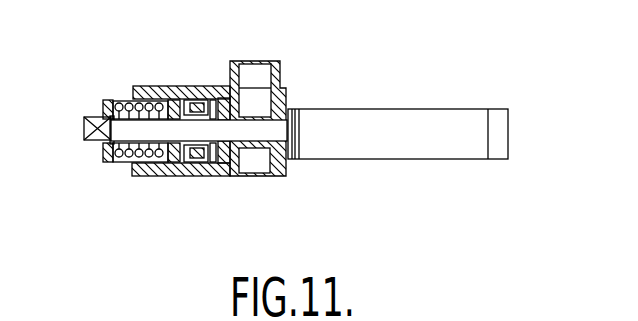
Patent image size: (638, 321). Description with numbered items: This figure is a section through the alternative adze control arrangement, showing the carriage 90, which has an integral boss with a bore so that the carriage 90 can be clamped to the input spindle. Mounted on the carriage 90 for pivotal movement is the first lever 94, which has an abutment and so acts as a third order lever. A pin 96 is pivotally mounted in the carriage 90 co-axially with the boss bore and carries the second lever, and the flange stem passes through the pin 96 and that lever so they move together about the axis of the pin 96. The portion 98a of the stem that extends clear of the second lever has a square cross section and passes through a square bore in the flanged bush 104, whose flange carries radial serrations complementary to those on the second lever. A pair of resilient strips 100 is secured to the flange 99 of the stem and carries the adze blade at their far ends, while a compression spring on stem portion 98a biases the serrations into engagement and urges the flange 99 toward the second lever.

The carriage 90 is at (193, 96).
The first lever 94 is at (190, 162).
The pin 96 is at (252, 160).
The portion of the stem 98a is at (130, 128).
The flange 99 is at (292, 158).
The resilient strips 100 is at (405, 123).
The flanged bush 104 is at (215, 157).